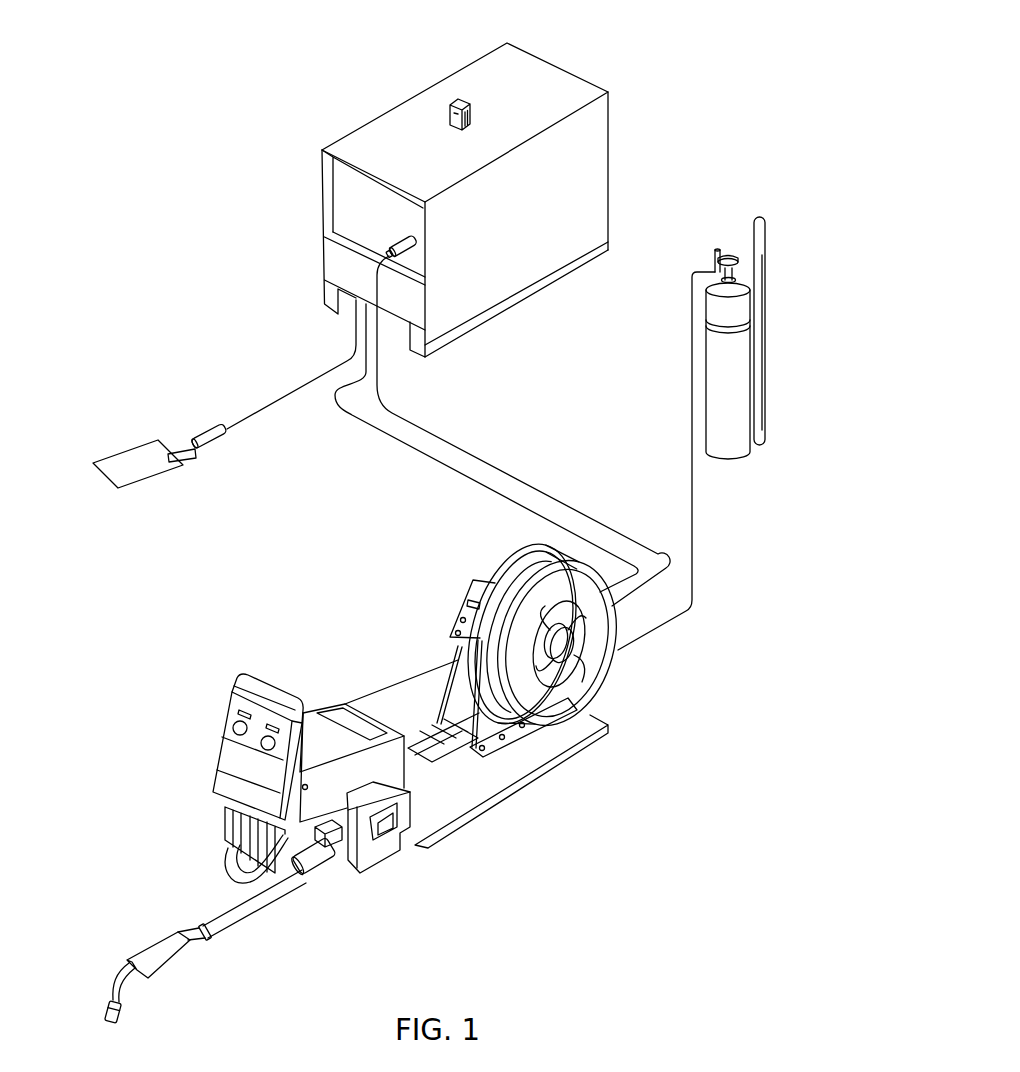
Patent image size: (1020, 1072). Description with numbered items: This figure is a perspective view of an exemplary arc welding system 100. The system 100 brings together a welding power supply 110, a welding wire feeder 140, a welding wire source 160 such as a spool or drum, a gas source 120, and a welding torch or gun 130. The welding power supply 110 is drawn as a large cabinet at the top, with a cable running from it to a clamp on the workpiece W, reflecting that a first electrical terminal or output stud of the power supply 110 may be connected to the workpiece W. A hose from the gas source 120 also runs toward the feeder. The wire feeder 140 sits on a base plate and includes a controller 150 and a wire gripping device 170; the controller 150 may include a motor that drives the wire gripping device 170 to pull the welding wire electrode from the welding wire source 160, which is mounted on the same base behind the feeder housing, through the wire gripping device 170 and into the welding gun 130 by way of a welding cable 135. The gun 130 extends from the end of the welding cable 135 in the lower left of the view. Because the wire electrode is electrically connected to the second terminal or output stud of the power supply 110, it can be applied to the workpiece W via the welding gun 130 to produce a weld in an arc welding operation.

The arc welding system 100 is at (193, 95).
The welding power supply 110 is at (580, 72).
The gas source 120 is at (772, 200).
The welding torch or gun 130 is at (175, 958).
The welding cable 135 is at (302, 868).
The welding wire feeder 140 is at (283, 652).
The controller 150 is at (318, 707).
The welding wire source 160 is at (533, 525).
The wire gripping device 170 is at (385, 848).
The workpiece W is at (132, 447).